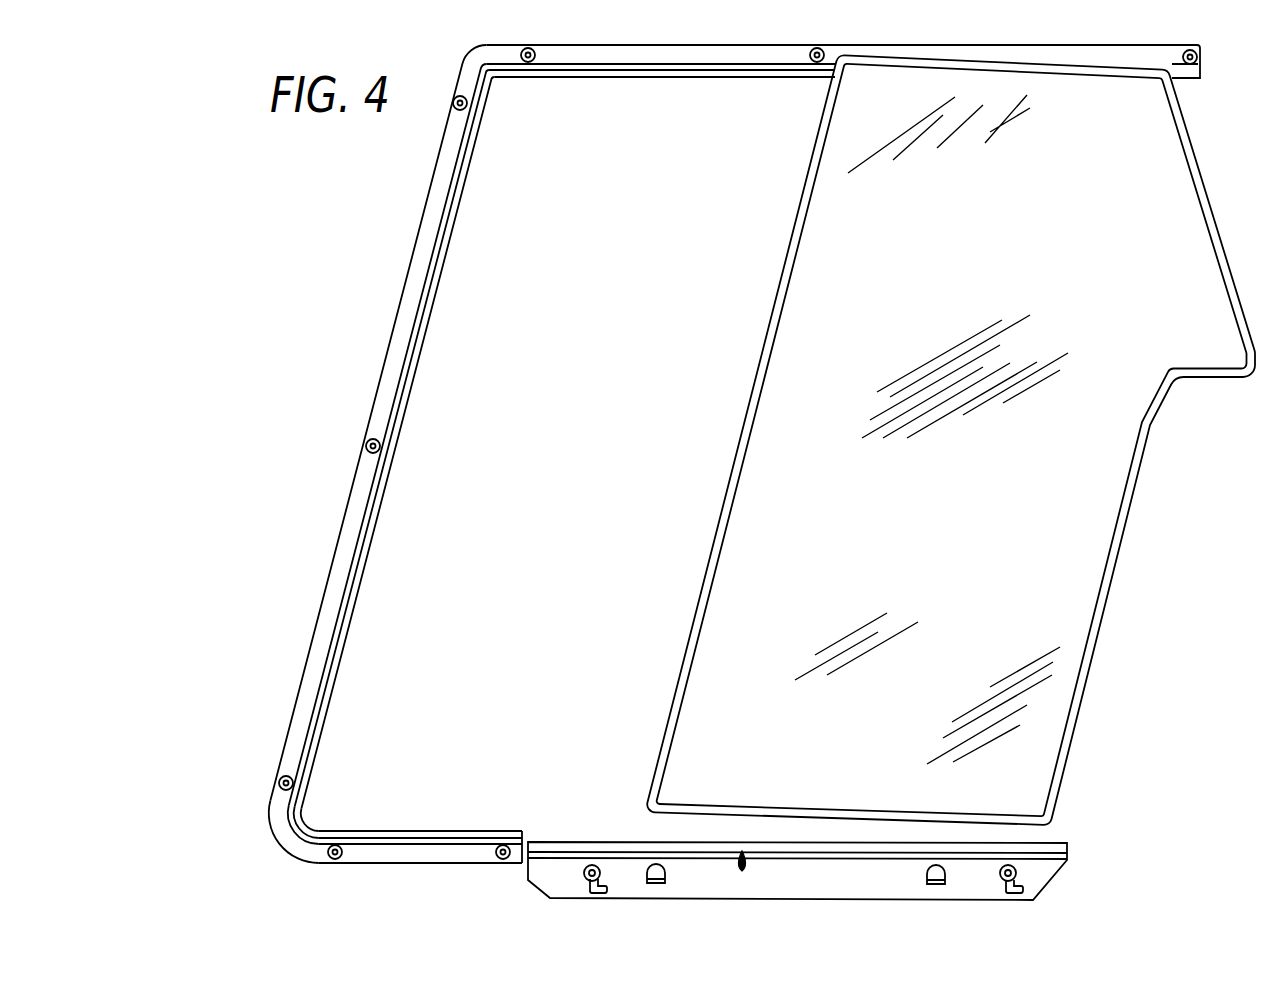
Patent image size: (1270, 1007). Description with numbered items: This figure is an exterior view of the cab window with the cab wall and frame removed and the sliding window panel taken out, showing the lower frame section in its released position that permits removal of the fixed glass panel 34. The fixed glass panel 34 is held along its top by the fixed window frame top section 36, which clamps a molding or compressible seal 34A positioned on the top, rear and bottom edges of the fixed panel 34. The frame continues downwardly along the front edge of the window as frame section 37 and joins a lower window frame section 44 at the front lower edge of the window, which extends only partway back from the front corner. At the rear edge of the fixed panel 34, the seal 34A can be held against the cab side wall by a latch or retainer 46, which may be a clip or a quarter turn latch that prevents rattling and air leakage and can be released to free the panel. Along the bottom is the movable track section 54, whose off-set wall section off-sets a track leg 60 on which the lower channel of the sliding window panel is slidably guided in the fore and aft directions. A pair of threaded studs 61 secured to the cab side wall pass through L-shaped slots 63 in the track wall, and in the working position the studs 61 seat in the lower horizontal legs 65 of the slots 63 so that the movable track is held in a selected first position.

The fixed glass panel 34 is at (768, 441).
The compressible seal 34A is at (722, 513).
The fixed window frame top section 36 is at (672, 57).
The frame section 37 is at (422, 260).
The lower window frame section 44 is at (412, 853).
The latch 46 is at (290, 826).
The track section 54 is at (741, 851).
The track leg 60 is at (818, 848).
The threaded studs 61 is at (592, 864).
The L-shaped slots 63 is at (1018, 877).
The lower horizontal legs 65 is at (605, 878).